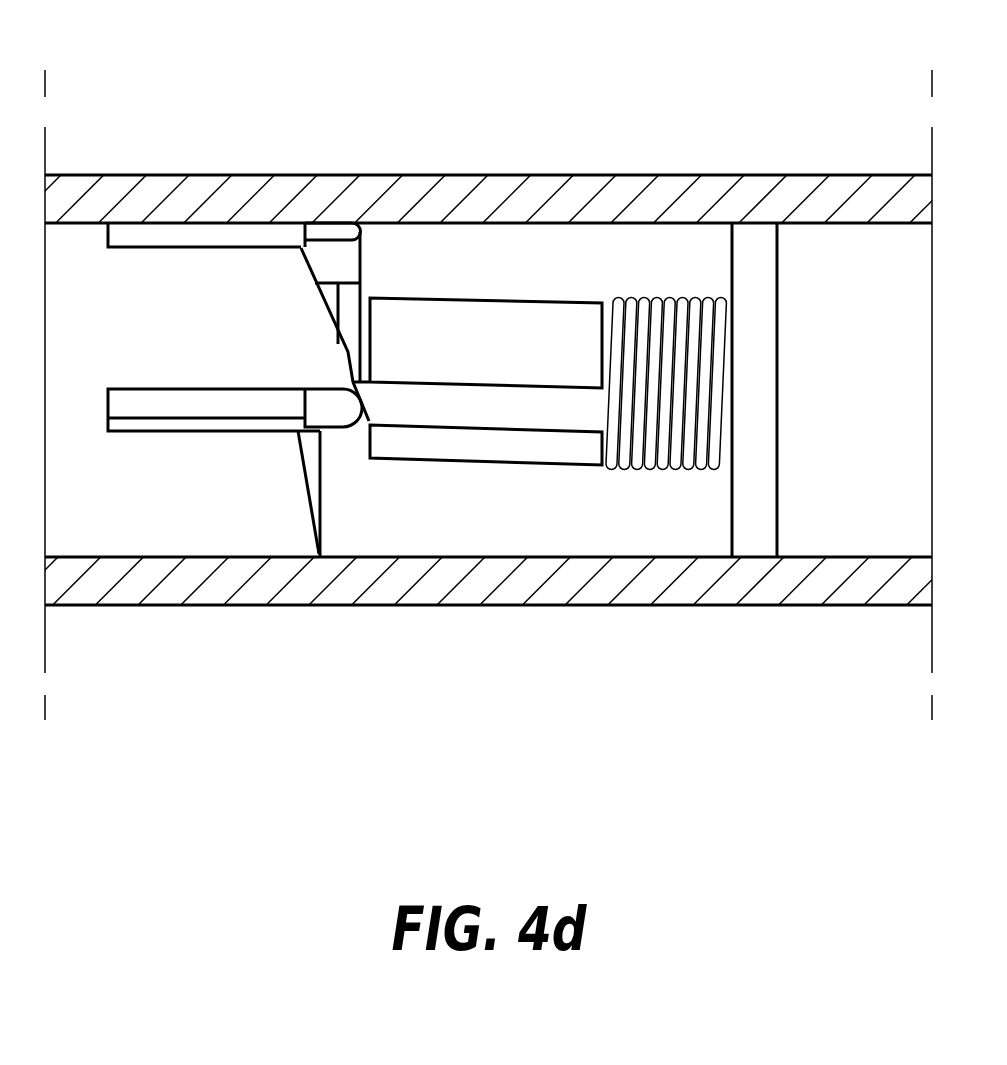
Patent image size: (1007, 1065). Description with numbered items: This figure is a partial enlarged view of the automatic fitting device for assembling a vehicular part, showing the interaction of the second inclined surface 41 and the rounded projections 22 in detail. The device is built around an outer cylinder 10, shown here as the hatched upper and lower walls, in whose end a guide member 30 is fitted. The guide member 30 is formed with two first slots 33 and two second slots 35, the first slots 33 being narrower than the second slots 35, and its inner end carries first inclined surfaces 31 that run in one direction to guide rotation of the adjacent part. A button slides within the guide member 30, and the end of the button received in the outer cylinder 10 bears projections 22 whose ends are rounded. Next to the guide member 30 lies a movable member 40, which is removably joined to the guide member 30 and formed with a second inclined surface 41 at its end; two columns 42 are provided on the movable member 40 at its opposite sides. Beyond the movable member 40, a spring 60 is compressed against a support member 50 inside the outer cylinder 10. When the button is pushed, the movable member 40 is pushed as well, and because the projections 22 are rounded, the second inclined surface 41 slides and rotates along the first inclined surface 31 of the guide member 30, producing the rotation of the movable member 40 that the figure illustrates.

The outer cylinder 10 is at (720, 600).
The projections 22 is at (323, 403).
The guide member 30 is at (230, 392).
The first inclined surface 31 is at (323, 510).
The first slot 33 is at (215, 405).
The second slot 35 is at (151, 238).
The movable member 40 is at (480, 320).
The second inclined surface 41 is at (364, 420).
The column 42 is at (542, 413).
The support member 50 is at (767, 282).
The spring 60 is at (663, 303).